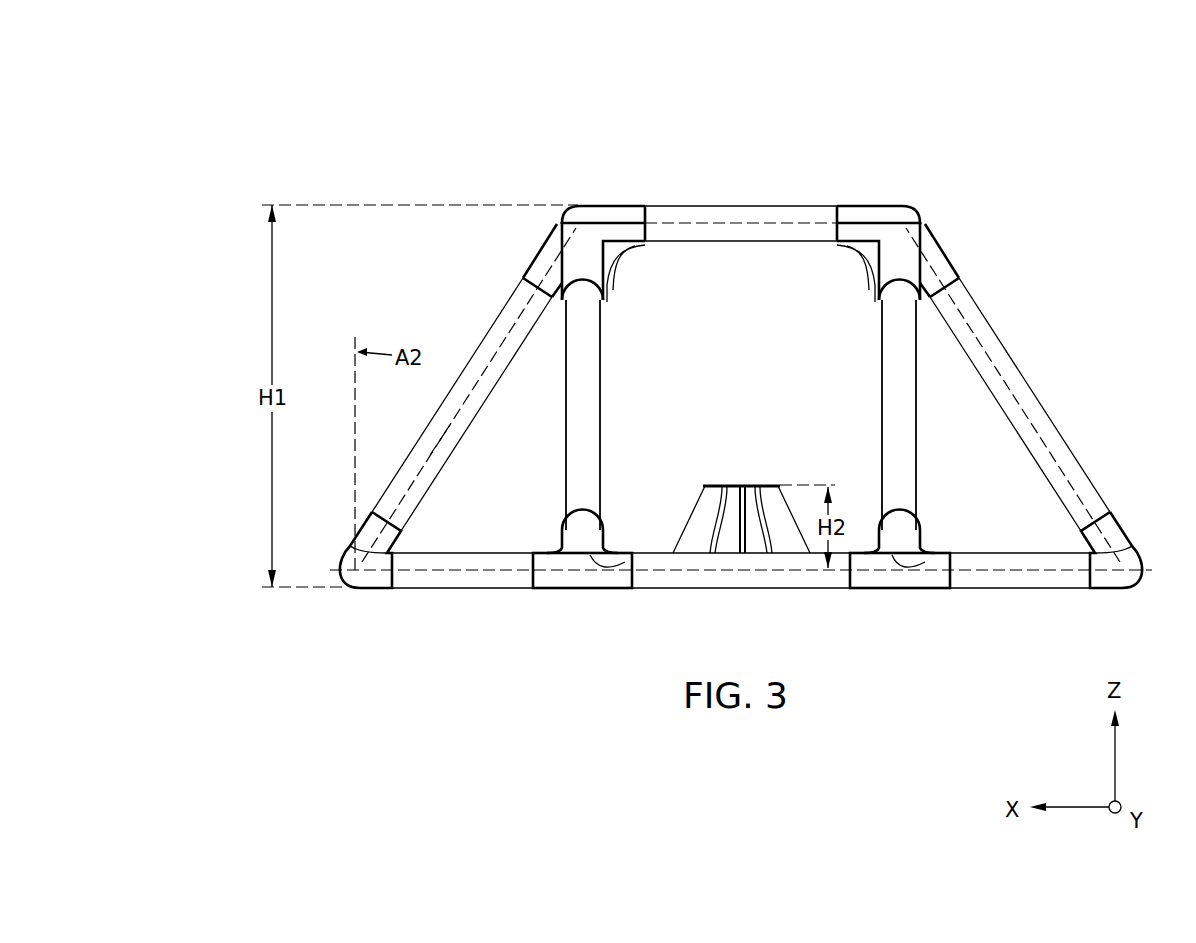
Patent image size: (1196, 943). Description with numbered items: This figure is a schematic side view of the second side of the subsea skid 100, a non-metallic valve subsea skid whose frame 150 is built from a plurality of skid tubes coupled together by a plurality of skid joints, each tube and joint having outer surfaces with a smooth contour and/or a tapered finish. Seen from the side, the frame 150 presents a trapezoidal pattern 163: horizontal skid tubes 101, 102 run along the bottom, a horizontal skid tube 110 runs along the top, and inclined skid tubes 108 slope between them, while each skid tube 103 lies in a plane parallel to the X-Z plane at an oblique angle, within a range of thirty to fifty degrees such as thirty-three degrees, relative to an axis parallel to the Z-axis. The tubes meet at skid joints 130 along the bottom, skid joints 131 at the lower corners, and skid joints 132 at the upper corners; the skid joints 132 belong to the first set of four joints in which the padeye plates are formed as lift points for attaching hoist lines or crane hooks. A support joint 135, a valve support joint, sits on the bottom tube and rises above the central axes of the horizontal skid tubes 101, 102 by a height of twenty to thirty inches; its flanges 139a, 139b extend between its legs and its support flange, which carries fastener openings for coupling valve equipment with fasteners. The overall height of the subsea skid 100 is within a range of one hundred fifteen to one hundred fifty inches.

The subsea skid 100 is at (309, 89).
The skid tube 101 is at (725, 588).
The skid tube 102 is at (437, 590).
The skid tube 103 is at (588, 372).
The skid tube 108 is at (505, 330).
The skid tube 110 is at (766, 214).
The skid joint 130 is at (563, 592).
The skid joint 131 is at (330, 566).
The skid joint 132 is at (576, 200).
The support joint 135 is at (697, 490).
The flange 139a is at (775, 512).
The flange 139b is at (705, 520).
The frame 150 is at (710, 200).
The trapezoidal pattern 163 is at (442, 435).